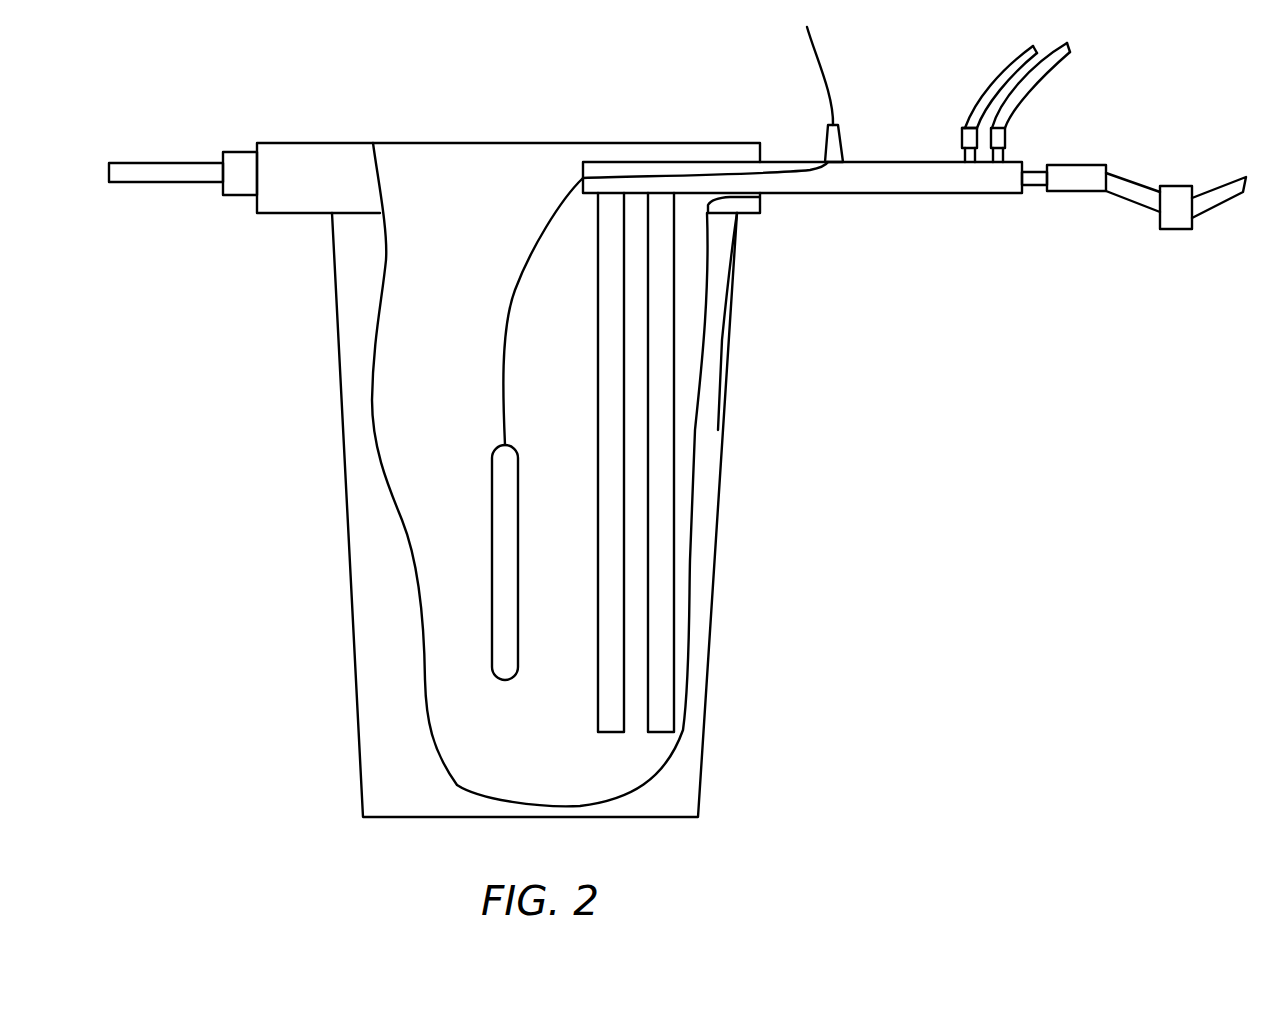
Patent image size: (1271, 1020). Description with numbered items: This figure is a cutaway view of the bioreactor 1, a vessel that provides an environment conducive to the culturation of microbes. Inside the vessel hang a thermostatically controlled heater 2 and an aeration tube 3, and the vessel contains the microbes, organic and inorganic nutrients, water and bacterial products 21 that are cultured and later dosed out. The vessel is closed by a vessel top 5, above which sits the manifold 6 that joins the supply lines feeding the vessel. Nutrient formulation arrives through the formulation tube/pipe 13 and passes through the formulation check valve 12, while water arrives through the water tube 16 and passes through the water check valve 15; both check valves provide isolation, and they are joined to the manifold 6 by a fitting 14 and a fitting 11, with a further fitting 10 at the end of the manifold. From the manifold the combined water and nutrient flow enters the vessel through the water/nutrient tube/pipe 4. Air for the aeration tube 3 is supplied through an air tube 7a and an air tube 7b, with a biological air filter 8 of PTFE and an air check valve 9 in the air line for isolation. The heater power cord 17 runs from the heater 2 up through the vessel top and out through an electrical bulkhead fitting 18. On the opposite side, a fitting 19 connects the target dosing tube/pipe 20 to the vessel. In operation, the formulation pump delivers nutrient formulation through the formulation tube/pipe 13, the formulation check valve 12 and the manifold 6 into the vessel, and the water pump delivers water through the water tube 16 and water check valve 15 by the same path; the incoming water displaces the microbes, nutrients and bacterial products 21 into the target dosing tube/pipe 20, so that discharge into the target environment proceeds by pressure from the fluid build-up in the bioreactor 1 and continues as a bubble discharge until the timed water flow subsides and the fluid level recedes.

The bioreactor vessel 1 is at (348, 502).
The thermostatically controlled heater 2 is at (497, 613).
The aeration tube 3 is at (662, 478).
The water/nutrient tube/pipe 4 is at (607, 567).
The vessel top 5 is at (737, 212).
The manifold 6 is at (940, 197).
The air tube 7a is at (1138, 197).
The air tube 7b is at (1218, 197).
The biological air filter 8 is at (1182, 190).
The air check valve 9 is at (1077, 191).
The fitting 10 is at (1030, 165).
The fitting 11 is at (1004, 152).
The formulation check valve 12 is at (1005, 136).
The formulation tube/pipe 13 is at (1073, 45).
The fitting 14 is at (963, 157).
The water check valve 15 is at (963, 126).
The water tube 16 is at (1007, 64).
The heater power cord 17 is at (568, 200).
The electrical bulkhead fitting 18 is at (825, 138).
The fitting 19 is at (232, 152).
The target dosing tube/pipe 20 is at (188, 177).
The microbes, organic and inorganic nutrients, water and bacterial products 21 is at (410, 290).